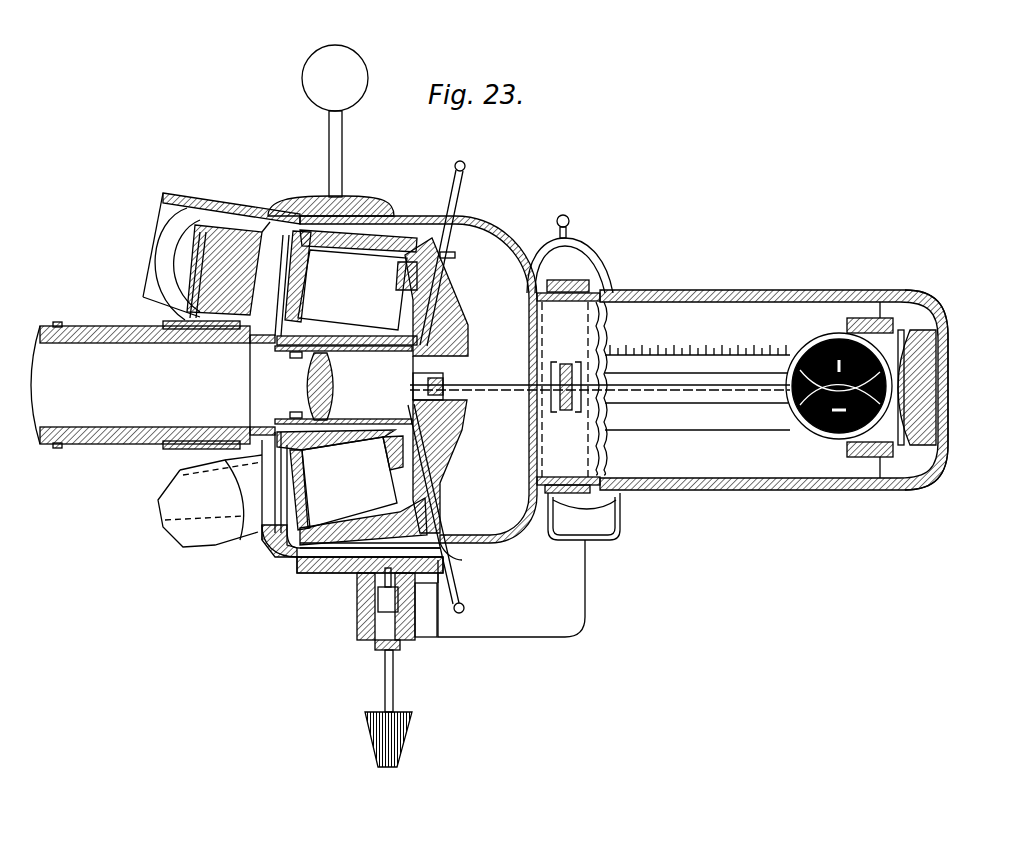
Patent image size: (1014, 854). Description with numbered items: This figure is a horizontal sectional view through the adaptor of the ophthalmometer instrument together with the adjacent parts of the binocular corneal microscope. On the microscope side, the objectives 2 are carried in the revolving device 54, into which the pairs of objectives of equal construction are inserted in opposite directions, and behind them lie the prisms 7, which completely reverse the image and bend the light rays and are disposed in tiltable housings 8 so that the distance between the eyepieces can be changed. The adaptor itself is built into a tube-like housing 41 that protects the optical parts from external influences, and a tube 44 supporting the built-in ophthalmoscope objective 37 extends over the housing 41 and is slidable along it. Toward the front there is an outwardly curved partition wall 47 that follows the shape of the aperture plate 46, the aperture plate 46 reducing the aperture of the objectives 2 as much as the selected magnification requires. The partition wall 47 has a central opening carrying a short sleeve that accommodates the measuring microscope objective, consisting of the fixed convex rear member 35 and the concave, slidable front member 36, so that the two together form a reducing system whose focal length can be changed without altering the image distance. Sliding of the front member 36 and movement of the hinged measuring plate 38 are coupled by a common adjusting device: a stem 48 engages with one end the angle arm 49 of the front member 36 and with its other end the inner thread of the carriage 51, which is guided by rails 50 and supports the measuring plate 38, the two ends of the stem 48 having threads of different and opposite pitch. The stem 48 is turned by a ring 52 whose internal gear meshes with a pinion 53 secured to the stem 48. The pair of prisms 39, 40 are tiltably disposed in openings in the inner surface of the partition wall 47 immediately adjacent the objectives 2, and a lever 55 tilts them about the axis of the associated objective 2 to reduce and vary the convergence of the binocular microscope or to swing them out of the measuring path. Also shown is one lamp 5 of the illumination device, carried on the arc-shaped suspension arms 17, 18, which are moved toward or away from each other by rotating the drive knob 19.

The objectives 2 is at (432, 294).
The lamp 5 is at (572, 250).
The prisms 7 is at (210, 230).
The tiltable housings 8 is at (163, 225).
The arc-shaped suspension arm 17 is at (422, 643).
The arc-shaped suspension arm 18 is at (358, 638).
The drive knob 19 is at (372, 733).
The rear objective member 35 is at (317, 400).
The front objective member 36 is at (413, 400).
The ophthalmoscope objective 37 is at (940, 384).
The measuring plate 38 is at (820, 336).
The prism 39 is at (430, 330).
The prism 40 is at (443, 482).
The tube-like housing 41 is at (690, 290).
The tube 44 is at (912, 300).
The aperture plate 46 is at (470, 228).
The partition wall 47 is at (352, 576).
The stem 48 is at (764, 393).
The angle arm 49 is at (430, 383).
The rails 50 is at (733, 352).
The carriage 51 is at (880, 452).
The ring 52 is at (622, 520).
The pinion 53 is at (606, 445).
The revolving device 54 is at (318, 572).
The lever 55 is at (465, 163).